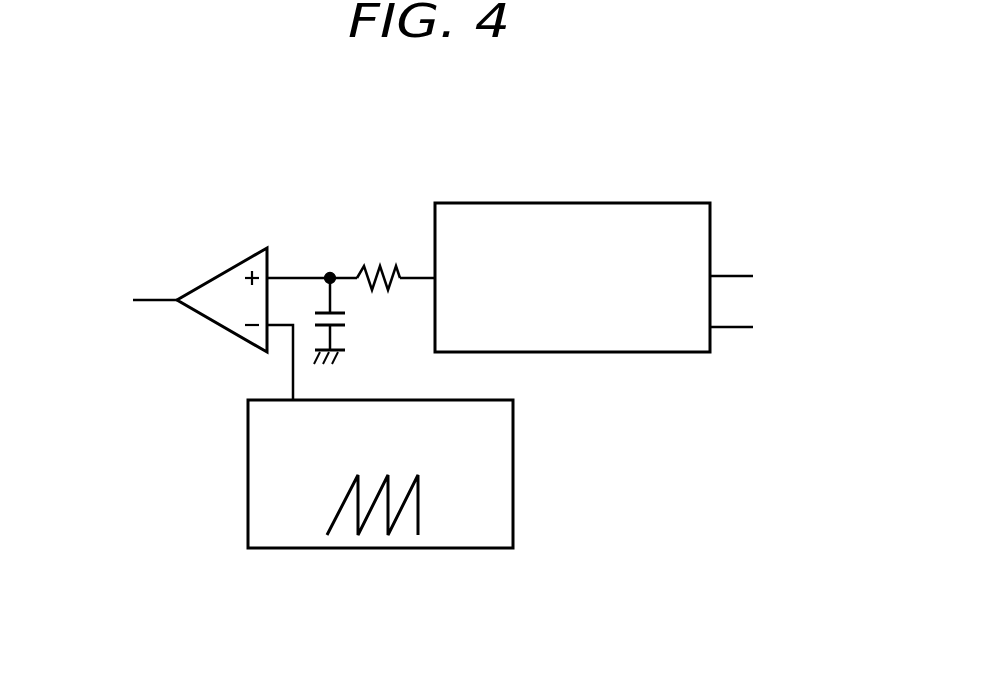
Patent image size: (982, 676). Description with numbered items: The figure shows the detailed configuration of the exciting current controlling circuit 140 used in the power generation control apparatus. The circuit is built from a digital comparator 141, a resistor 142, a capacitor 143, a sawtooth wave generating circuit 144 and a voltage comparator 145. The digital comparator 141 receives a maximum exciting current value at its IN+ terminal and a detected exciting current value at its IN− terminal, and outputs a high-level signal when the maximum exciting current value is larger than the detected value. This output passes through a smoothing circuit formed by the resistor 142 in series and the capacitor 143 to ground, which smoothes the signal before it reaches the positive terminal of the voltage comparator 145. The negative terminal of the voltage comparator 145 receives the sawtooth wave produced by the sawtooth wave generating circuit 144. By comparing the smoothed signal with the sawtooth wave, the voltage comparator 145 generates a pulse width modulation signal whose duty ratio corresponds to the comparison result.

The exciting current controlling circuit 140 is at (504, 148).
The digital comparator 141 is at (633, 202).
The resistor 142 is at (362, 265).
The capacitor 143 is at (343, 318).
The sawtooth wave generating circuit 144 is at (513, 472).
The voltage comparator 145 is at (218, 272).